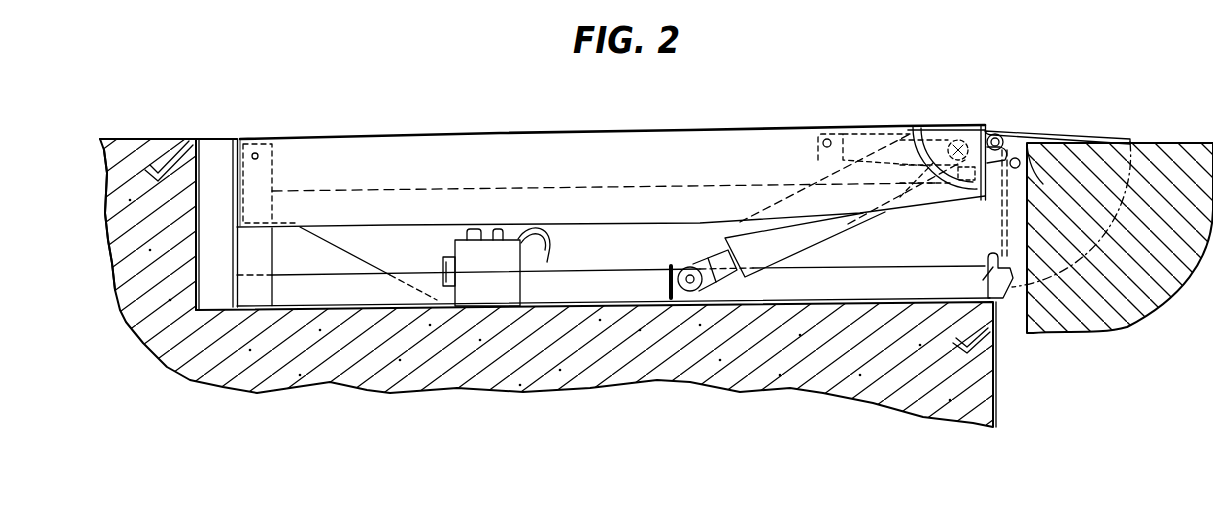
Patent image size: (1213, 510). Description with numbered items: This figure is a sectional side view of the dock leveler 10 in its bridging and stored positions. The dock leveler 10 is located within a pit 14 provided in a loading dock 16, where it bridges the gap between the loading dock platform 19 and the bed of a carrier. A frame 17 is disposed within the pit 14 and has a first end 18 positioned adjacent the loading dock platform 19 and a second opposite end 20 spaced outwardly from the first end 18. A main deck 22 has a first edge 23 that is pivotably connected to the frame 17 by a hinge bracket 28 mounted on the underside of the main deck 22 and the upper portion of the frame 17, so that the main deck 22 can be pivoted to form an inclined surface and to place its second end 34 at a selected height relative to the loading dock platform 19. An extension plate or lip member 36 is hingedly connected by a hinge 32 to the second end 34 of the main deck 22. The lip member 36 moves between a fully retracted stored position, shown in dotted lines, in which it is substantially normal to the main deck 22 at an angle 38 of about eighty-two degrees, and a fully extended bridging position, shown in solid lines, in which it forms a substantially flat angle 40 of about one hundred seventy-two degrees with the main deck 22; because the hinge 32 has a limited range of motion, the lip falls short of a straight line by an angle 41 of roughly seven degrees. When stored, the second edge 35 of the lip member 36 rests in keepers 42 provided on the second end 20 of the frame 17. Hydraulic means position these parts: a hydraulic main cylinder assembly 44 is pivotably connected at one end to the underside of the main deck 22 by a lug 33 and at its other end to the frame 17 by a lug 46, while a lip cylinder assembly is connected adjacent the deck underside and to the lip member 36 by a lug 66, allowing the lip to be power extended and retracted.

The dock leveler 10 is at (358, 96).
The pit 14 is at (880, 303).
The loading dock 16 is at (133, 298).
The frame 17 is at (550, 288).
The first end 18 is at (220, 298).
The loading dock platform 19 is at (146, 139).
The second end 20 is at (997, 304).
The main deck 22 is at (507, 133).
The first edge 23 is at (300, 138).
The hinge bracket 28 is at (250, 148).
The hinge 32 is at (998, 136).
The lug 33 is at (963, 143).
The second end 34 is at (957, 126).
The second edge 35 is at (1013, 285).
The lip member 36 is at (1107, 138).
The substantially normal angle 38 is at (984, 203).
The substantially 180° angle 40 is at (950, 208).
The angle 41 is at (830, 135).
The keepers 42 is at (1007, 300).
The hydraulic main cylinder assembly 44 is at (782, 225).
The lug 46 is at (694, 295).
The lug 66 is at (1019, 165).